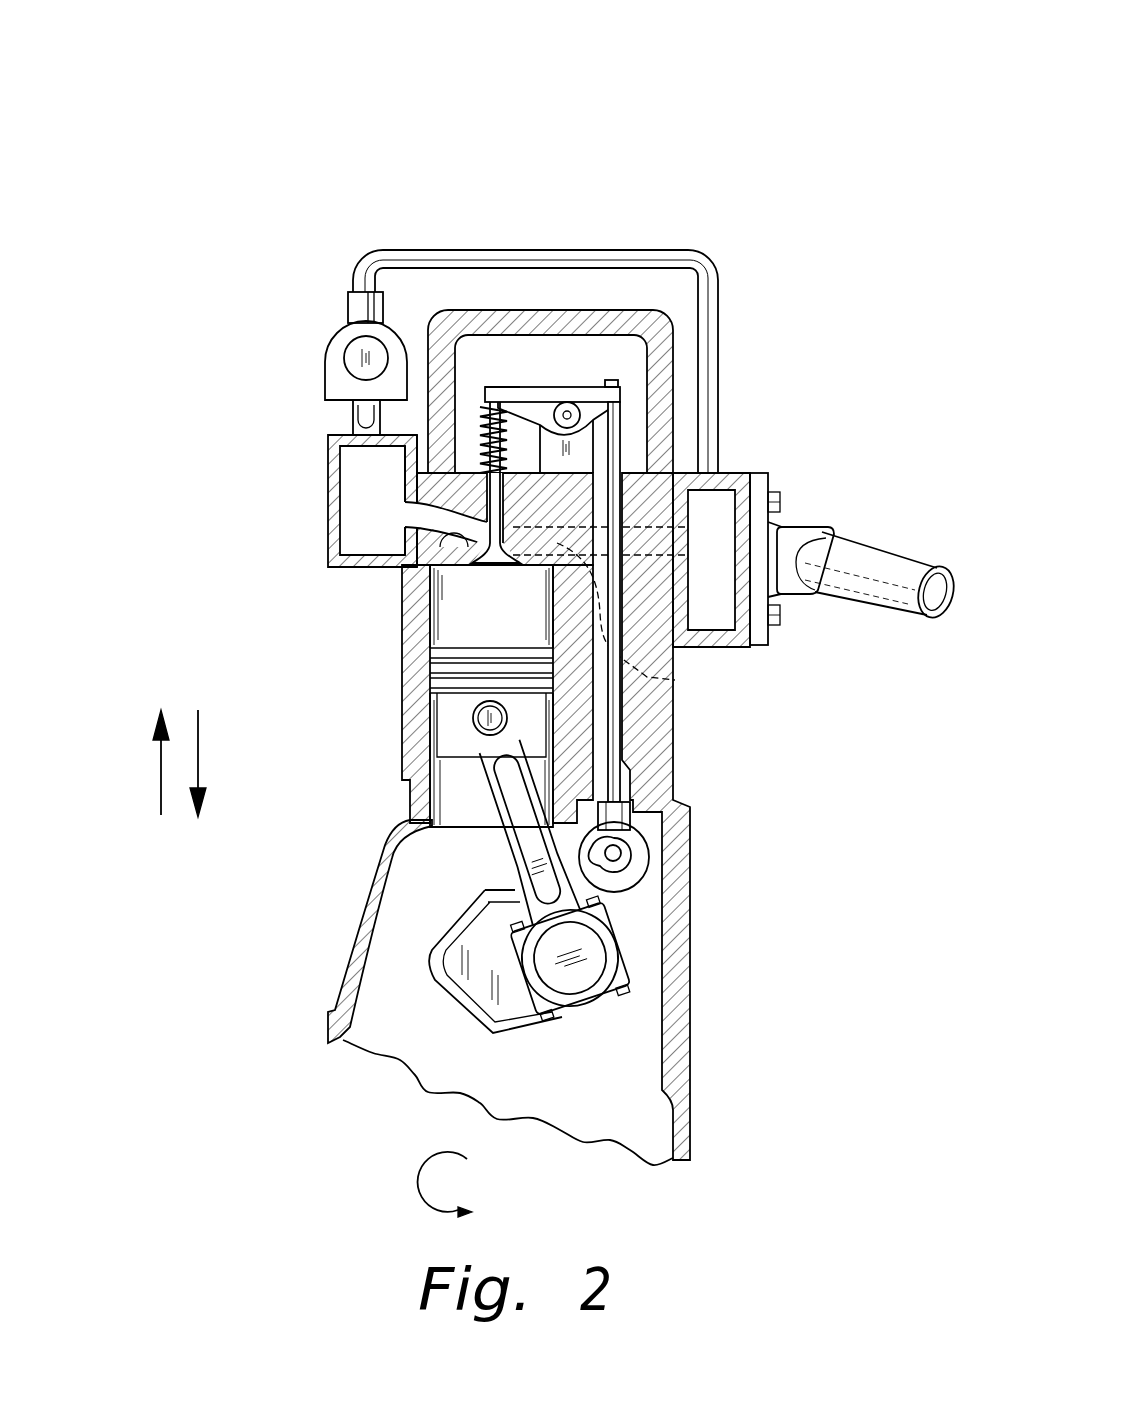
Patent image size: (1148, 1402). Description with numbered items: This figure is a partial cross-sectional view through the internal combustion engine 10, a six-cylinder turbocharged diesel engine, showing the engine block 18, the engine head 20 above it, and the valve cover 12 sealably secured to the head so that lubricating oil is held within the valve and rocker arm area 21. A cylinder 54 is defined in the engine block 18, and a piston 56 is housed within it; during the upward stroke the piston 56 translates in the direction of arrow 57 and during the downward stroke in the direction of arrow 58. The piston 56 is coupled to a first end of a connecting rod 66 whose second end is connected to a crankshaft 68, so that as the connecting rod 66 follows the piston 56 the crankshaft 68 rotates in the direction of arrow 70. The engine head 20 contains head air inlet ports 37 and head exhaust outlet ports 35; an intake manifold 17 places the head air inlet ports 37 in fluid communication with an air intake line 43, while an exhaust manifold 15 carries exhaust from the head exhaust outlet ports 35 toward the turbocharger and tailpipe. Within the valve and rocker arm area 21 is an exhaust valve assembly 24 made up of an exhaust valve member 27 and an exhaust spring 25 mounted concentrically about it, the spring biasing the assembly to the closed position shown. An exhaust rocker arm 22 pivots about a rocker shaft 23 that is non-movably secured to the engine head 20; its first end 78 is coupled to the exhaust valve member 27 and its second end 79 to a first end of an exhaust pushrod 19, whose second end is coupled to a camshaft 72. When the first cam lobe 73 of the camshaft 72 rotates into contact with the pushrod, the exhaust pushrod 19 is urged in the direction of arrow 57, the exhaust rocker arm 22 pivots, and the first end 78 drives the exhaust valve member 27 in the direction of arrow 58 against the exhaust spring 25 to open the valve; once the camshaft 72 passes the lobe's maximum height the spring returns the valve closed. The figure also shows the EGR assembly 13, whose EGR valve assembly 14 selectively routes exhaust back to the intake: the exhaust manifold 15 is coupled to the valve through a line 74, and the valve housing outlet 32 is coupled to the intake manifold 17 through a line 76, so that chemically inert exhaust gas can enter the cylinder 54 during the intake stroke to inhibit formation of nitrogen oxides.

The internal combustion engine 10 is at (713, 88).
The valve cover 12 is at (525, 310).
The EGR assembly 13 is at (262, 270).
The EGR valve assembly 14 is at (337, 340).
The exhaust manifold 15 is at (347, 568).
The intake manifold 17 is at (732, 647).
The engine block 18 is at (400, 705).
The exhaust pushrod 19 is at (620, 732).
The engine head 20 is at (420, 570).
The valve and rocker arm area 21 is at (636, 437).
The exhaust rocker arm 22 is at (583, 393).
The rocker shaft 23 is at (624, 393).
The exhaust valve assembly 24 is at (476, 392).
The exhaust spring 25 is at (480, 420).
The exhaust valve member 27 is at (405, 526).
The valve housing outlet 32 is at (352, 290).
The head exhaust outlet ports 35 is at (420, 600).
The head air inlet ports 37 is at (675, 680).
The air intake line 43 is at (933, 600).
The cylinder 54 is at (435, 636).
The piston 56 is at (412, 765).
The arrow 57 is at (161, 773).
The arrow 58 is at (198, 750).
The connecting rod 66 is at (498, 849).
The crankshaft 68 is at (428, 962).
The arrow 70 is at (418, 1182).
The camshaft 72 is at (622, 852).
The first cam lobe 73 is at (595, 889).
The line 74 is at (353, 420).
The line 76 is at (710, 262).
The first end of exhaust rocker arm 78 is at (496, 383).
The second end of exhaust rocker arm 79 is at (580, 415).